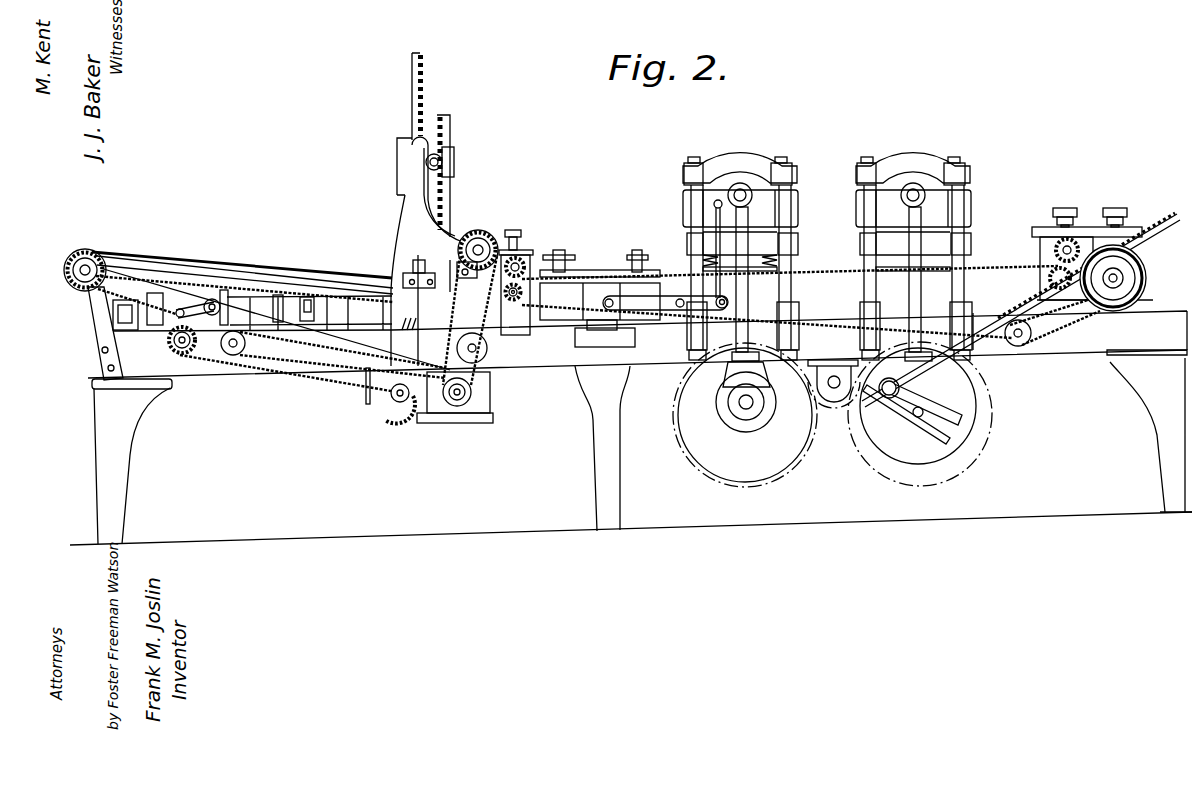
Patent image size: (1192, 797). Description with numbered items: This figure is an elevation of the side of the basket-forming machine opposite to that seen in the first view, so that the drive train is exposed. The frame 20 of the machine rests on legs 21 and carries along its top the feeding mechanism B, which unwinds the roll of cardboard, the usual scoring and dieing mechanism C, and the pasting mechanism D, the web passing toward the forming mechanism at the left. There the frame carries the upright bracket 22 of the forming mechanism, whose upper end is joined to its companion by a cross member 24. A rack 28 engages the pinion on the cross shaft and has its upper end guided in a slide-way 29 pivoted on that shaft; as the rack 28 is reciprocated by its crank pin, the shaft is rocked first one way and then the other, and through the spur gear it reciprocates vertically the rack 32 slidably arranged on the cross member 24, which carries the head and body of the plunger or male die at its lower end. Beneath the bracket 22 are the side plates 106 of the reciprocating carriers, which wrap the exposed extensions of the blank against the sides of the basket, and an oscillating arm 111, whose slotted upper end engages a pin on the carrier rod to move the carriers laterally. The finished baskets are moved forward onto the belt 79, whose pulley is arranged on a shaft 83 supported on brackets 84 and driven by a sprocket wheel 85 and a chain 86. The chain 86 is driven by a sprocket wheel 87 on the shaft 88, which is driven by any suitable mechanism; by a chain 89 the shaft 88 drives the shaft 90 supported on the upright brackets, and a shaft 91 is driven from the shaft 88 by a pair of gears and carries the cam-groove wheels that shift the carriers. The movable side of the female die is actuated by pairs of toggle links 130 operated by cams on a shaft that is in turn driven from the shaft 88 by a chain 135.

The frame 20 is at (538, 352).
The legs 21 is at (127, 493).
The upright bracket 22 is at (410, 228).
The cross member 24 is at (403, 158).
The rack 28 is at (450, 128).
The slide-way 29 is at (455, 165).
The rack 32 is at (410, 65).
The belt 79 is at (165, 258).
The shaft 83 is at (78, 256).
The brackets 84 is at (96, 318).
The sprocket wheel 85 is at (98, 262).
The chain 86 is at (193, 293).
The sprocket wheel 87 is at (443, 398).
The shaft 88 is at (462, 398).
The chain 89 is at (472, 234).
The shaft 90 is at (481, 249).
The shaft 91 is at (396, 398).
The side plates 106 is at (410, 268).
The oscillating arms 111 is at (412, 310).
The toggle links 130 is at (178, 330).
The chain 135 is at (300, 382).
The feeding mechanism B is at (1092, 224).
The scoring and dieing mechanism C is at (893, 148).
The pasting mechanism D is at (588, 270).